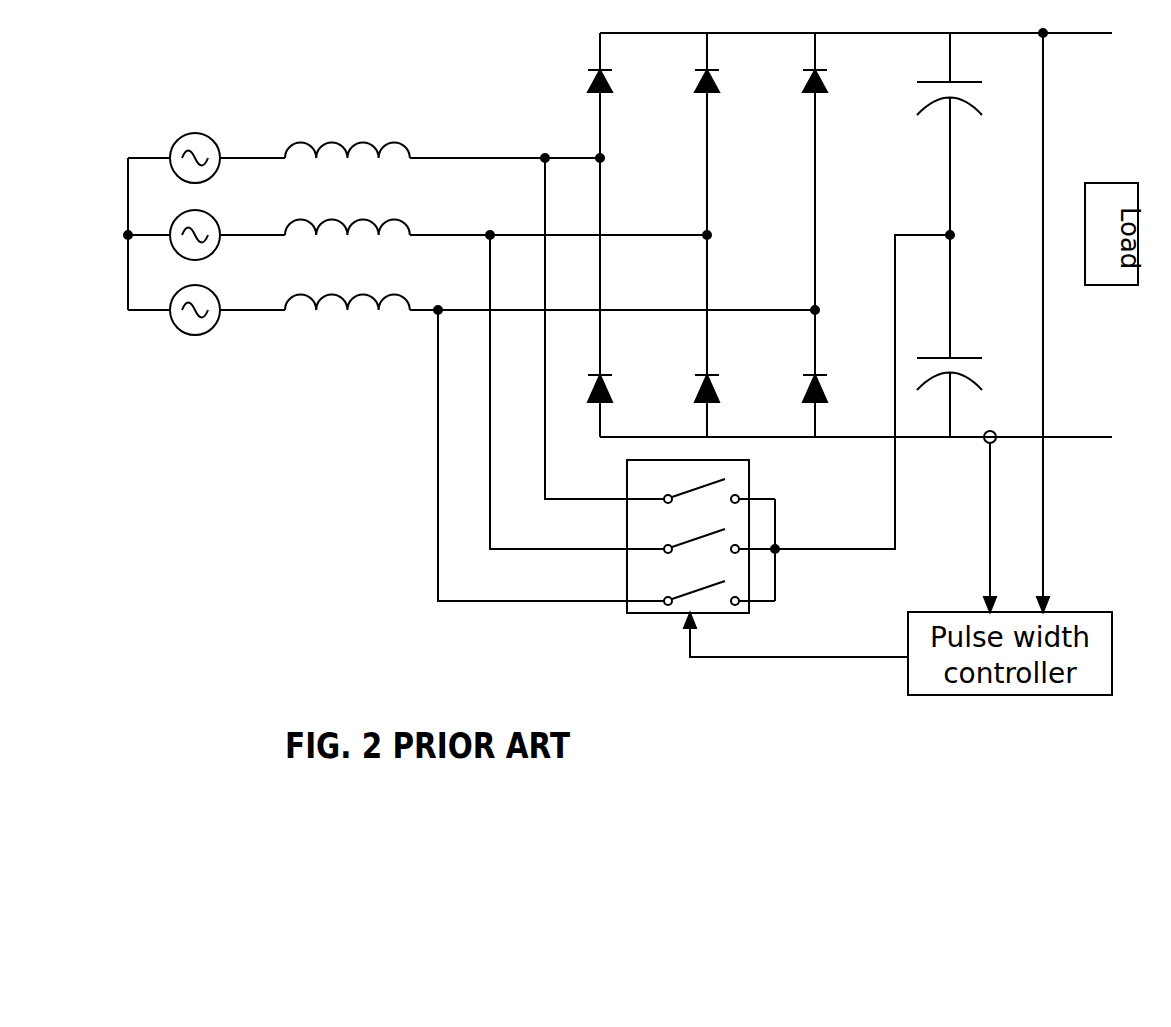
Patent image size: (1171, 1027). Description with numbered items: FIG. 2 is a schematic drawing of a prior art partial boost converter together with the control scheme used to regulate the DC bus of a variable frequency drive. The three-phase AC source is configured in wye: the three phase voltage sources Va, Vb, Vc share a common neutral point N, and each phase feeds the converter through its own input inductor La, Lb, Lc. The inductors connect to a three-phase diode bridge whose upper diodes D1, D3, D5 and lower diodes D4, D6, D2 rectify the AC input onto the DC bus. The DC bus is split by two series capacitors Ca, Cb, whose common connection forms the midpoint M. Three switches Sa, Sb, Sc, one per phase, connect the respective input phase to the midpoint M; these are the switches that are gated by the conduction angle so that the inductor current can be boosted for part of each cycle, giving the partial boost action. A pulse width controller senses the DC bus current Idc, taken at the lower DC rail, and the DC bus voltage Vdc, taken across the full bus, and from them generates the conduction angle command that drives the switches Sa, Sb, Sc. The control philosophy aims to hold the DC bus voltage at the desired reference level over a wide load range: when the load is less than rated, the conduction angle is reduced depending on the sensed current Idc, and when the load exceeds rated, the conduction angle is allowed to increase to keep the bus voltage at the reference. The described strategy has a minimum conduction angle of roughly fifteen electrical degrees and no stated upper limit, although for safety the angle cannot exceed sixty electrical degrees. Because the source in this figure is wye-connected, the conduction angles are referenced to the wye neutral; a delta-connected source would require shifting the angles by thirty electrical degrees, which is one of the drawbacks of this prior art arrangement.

The neutral point N is at (130, 234).
The phase a voltage source Va is at (212, 151).
The phase b voltage source Vb is at (213, 229).
The phase c voltage source Vc is at (212, 304).
The phase a inductor La is at (347, 135).
The phase b inductor Lb is at (347, 211).
The phase c inductor Lc is at (347, 287).
The diode D1 is at (625, 86).
The diode D2 is at (840, 391).
The diode D3 is at (732, 86).
The diode D4 is at (625, 391).
The diode D5 is at (840, 86).
The diode D6 is at (732, 391).
The upper dc-link capacitor Ca is at (969, 134).
The lower dc-link capacitor Cb is at (970, 336).
The dc-link midpoint M is at (886, 385).
The phase a switch Sa is at (711, 484).
The phase b switch Sb is at (711, 533).
The phase c switch Sc is at (711, 585).
The sensed current Idc is at (966, 521).
The dc voltage feedback Vdc is at (1071, 322).